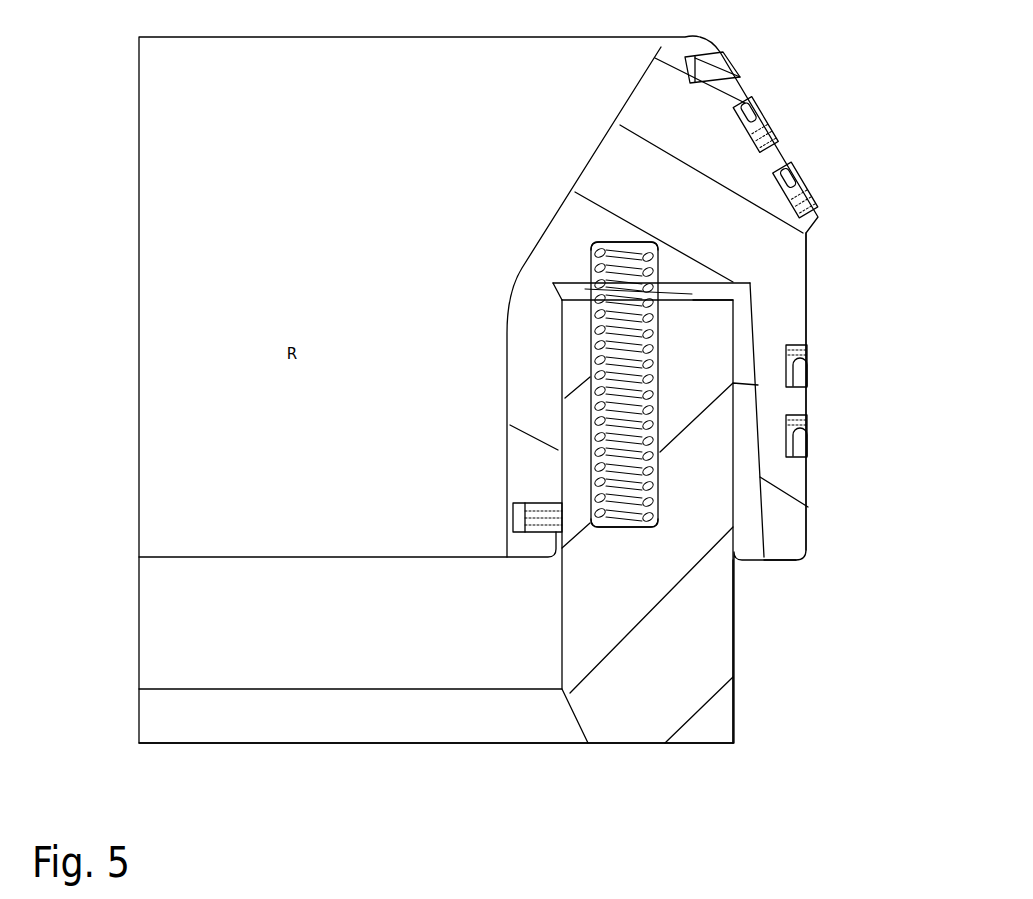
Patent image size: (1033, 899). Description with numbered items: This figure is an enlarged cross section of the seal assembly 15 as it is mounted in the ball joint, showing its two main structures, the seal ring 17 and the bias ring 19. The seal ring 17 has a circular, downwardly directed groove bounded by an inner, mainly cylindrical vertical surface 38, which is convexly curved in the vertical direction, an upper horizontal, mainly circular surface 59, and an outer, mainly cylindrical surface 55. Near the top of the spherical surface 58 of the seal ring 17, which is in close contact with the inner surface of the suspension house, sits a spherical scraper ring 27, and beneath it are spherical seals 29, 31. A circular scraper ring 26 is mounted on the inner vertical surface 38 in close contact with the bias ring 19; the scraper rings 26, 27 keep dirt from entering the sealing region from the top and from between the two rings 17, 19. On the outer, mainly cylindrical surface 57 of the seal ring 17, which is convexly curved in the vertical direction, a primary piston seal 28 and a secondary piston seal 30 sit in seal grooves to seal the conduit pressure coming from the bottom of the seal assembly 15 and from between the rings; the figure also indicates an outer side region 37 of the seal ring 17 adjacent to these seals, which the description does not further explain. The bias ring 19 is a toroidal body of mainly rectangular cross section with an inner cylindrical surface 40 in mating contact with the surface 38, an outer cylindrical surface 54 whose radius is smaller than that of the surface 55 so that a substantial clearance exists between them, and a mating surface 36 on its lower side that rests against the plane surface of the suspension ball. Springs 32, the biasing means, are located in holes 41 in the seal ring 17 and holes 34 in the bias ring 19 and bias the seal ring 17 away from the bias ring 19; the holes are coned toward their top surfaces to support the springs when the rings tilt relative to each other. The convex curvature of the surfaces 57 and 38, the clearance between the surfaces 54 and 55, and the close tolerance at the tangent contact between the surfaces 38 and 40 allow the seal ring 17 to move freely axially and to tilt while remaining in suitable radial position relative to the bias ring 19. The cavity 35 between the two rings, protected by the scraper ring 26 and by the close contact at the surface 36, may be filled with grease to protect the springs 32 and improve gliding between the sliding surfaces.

The seal assembly 15 is at (127, 678).
The seal ring 17 is at (530, 387).
The bias ring 19 is at (703, 635).
The circular scraper ring 26 is at (513, 523).
The spherical scraper ring 27 is at (742, 76).
The primary piston seal 28 is at (808, 427).
The spherical seal 29 is at (770, 125).
The secondary piston seal 30 is at (810, 362).
The spherical seal 31 is at (803, 190).
The biasing means (springs) 32 is at (592, 262).
The holes in the bias ring 34 is at (657, 513).
The cavity 35 is at (743, 343).
The mating surface 36 is at (657, 750).
The rear wall 37 is at (805, 263).
The inner mainly cylindrical vertical surface 38 is at (555, 320).
The inner cylindrical surface 40 is at (558, 632).
The holes in the seal ring 41 is at (600, 240).
The outer mainly cylindrical surface of the bias ring 54 is at (758, 385).
The outer mainly cylindrical surface of the groove 55 is at (758, 447).
The outer mainly cylindrical surface of the seal ring 57 is at (802, 530).
The spherical surface 58 is at (745, 80).
The upper horizontal mainly circular surface 59 is at (693, 279).